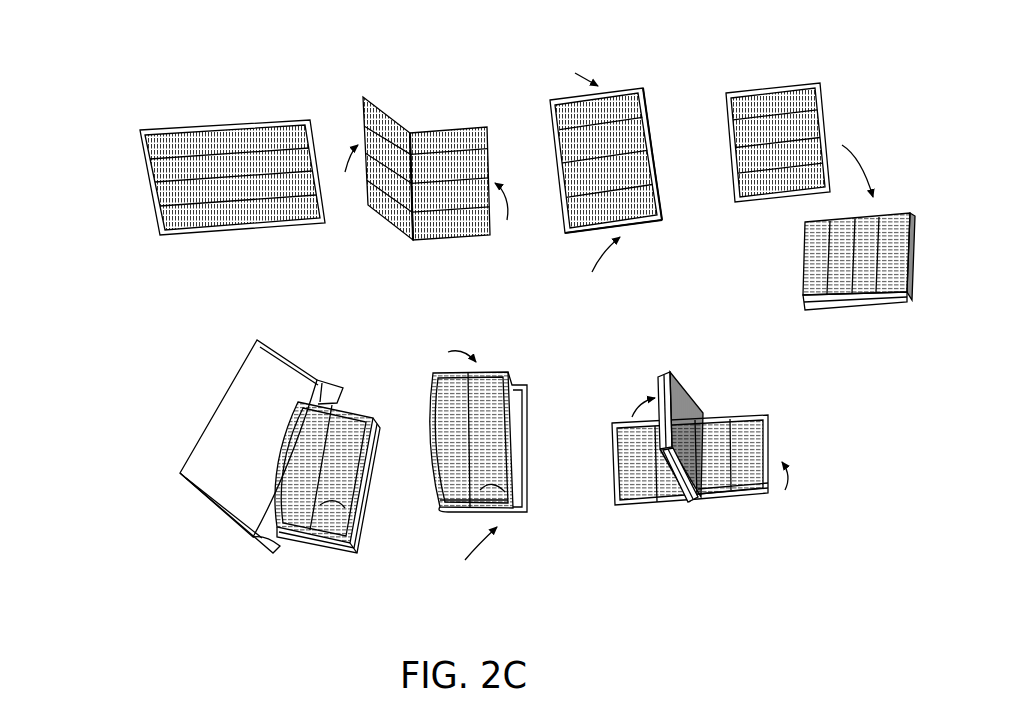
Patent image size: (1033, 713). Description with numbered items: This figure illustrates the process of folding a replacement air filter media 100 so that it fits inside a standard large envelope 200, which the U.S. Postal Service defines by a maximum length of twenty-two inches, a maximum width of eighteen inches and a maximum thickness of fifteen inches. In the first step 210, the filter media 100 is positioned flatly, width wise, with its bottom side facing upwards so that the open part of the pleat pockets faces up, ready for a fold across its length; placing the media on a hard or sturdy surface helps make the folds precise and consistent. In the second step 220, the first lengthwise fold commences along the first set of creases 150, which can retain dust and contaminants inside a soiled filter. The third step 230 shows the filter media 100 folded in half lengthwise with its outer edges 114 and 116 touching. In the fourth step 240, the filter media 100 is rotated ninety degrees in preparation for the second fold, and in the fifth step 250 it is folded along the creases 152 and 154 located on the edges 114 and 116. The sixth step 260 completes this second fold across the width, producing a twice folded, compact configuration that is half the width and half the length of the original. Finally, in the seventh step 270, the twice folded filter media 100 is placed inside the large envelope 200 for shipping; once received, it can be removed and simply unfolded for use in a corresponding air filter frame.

The air filter media 100 is at (172, 129).
The outer edge 114 is at (660, 215).
The outer edge 116 is at (652, 118).
The first set of creases 150 is at (412, 130).
The crease 152 is at (700, 410).
The crease 154 is at (690, 500).
The large envelope 200 is at (243, 360).
The first step 210 is at (124, 160).
The second step 220 is at (352, 124).
The third step 230 is at (540, 128).
The fourth step 240 is at (867, 122).
The fifth step 250 is at (624, 390).
The sixth step 260 is at (444, 356).
The seventh step 270 is at (207, 397).